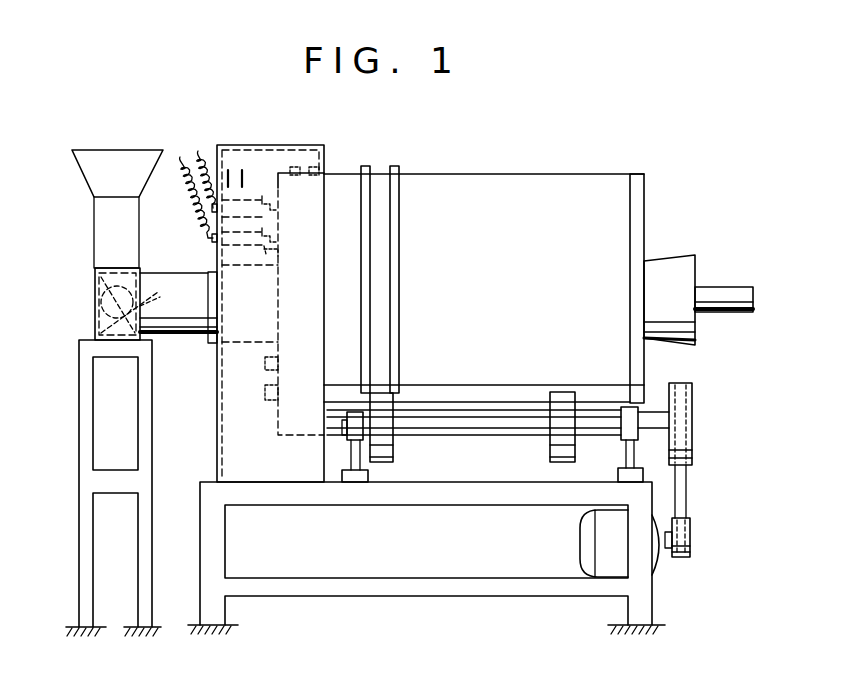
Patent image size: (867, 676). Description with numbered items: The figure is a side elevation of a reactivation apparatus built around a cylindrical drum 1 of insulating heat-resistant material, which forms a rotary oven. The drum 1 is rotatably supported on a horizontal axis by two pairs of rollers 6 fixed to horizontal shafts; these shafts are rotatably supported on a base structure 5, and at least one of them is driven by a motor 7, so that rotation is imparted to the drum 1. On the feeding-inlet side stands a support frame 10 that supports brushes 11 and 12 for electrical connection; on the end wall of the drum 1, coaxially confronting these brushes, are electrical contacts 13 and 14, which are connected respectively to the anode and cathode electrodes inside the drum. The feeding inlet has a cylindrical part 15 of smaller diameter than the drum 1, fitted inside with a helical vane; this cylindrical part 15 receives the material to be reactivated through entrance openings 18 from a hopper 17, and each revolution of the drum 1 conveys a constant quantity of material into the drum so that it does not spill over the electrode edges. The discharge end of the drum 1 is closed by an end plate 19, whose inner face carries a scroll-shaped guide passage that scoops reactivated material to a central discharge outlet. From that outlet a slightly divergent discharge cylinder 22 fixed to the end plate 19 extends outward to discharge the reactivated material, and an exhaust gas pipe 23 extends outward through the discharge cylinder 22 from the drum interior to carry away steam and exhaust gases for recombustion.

The cylindrical drum 1 is at (554, 187).
The base structure 5 is at (200, 545).
The rollers 6 is at (382, 433).
The motor 7 is at (607, 545).
The support frame 10 is at (217, 422).
The brush 11 is at (235, 178).
The brush 12 is at (262, 250).
The electrical contact 13 is at (262, 200).
The electrical contact 14 is at (266, 248).
The cylindrical part 15 is at (177, 323).
The hopper 17 is at (116, 155).
The entrance openings 18 is at (145, 304).
The end plate 19 is at (637, 197).
The discharge cylinder 22 is at (678, 270).
The exhaust gas pipe 23 is at (720, 296).